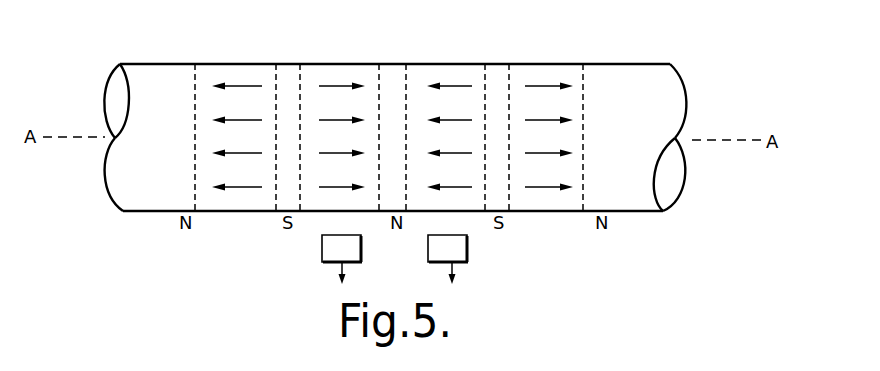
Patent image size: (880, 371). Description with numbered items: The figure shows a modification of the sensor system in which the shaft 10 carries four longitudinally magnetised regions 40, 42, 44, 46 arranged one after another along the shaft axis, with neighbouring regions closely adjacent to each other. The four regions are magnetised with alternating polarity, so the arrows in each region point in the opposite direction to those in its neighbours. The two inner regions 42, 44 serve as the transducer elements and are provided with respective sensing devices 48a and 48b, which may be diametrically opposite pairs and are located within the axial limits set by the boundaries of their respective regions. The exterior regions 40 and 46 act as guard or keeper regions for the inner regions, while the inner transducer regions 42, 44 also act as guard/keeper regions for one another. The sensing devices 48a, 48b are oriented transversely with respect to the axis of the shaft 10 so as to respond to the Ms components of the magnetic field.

The shaft 10 is at (171, 70).
The exterior magnetised region 40 is at (257, 70).
The inner transducer region 42 is at (358, 70).
The inner transducer region 44 is at (461, 70).
The exterior magnetised region 46 is at (553, 70).
The sensing device 48a is at (322, 250).
The sensing device 48b is at (467, 250).